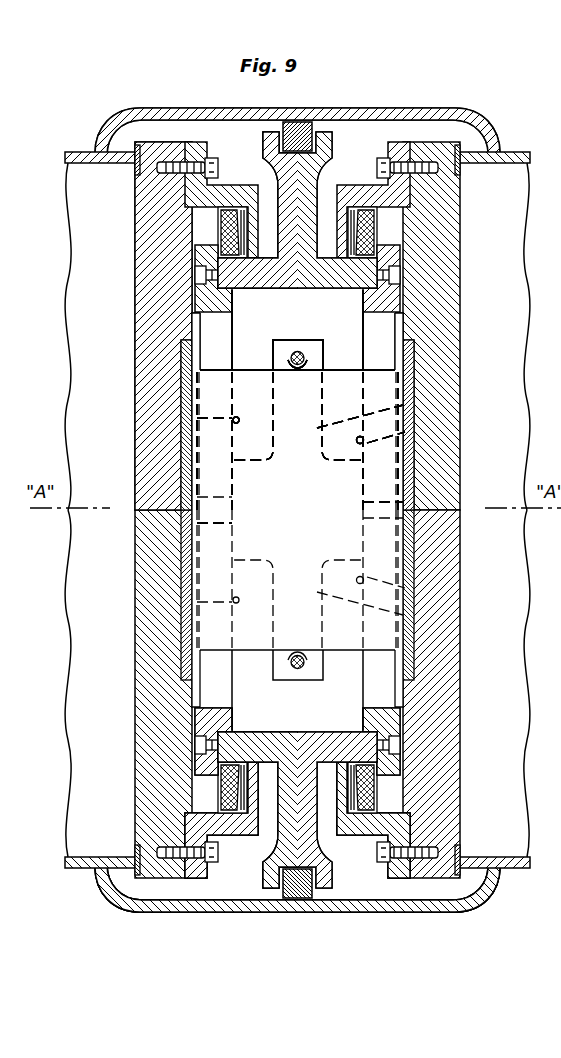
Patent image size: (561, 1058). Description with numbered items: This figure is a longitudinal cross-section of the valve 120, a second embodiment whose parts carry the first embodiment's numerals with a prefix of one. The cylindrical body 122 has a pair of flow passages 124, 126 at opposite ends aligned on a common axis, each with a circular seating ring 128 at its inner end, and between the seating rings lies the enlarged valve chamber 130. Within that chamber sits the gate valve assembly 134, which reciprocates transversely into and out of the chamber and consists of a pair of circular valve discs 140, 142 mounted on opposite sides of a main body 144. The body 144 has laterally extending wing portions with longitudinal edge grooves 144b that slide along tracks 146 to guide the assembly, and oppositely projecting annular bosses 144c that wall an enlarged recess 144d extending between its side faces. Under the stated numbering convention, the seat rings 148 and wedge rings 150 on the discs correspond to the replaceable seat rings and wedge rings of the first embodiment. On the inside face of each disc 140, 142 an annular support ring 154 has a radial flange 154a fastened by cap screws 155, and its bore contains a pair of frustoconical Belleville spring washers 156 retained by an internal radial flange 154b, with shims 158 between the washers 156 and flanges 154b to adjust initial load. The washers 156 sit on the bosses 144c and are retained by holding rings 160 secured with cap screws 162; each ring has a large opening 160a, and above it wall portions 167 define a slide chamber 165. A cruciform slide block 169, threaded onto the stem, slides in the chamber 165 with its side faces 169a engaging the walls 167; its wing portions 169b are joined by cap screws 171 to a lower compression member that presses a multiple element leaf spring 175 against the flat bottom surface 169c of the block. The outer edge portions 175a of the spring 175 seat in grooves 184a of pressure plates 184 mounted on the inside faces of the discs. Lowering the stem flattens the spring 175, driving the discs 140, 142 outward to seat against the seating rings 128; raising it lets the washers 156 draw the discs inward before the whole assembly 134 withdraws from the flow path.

The valve 120 is at (166, 68).
The cylindrical body 122 is at (470, 905).
The flow passage 124 is at (66, 855).
The flow passage 126 is at (520, 857).
The circular seating ring 128 is at (148, 140).
The valve chamber 130 is at (243, 880).
The gate valve assembly 134 is at (90, 350).
The valve disc 140 is at (135, 630).
The valve disc 142 is at (462, 620).
The main body 144 is at (328, 185).
The longitudinal edge groove 144b is at (280, 130).
The annular ring-like boss 144c is at (400, 290).
The enlarged opening or recess 144d is at (278, 735).
The tracks 146 is at (300, 128).
The cover arcuate portion 148 is at (130, 878).
The seal strip 150 is at (137, 838).
The annular support ring 154 is at (198, 140).
The radial flange 154a is at (190, 876).
The internal radial flange 154b is at (258, 830).
The cap screws 155 is at (218, 165).
The Belleville spring washers 156 is at (228, 806).
The shims 158 is at (230, 222).
The holding ring 160 is at (200, 718).
The large opening 160a is at (215, 708).
The cap screws 162 is at (200, 275).
The slide chamber 165 is at (340, 352).
The wall portions 167 is at (195, 422).
The slide block 169 is at (340, 562).
The side faces 169a is at (402, 490).
The wing portions 169b is at (278, 350).
The flat bottom surface 169c is at (410, 400).
The cap screws 171 is at (300, 350).
The multiple element leaf spring 175 is at (205, 342).
The outer edge portions 175a is at (190, 478).
The pressure plates 184 is at (188, 570).
The grooves 184a is at (186, 385).